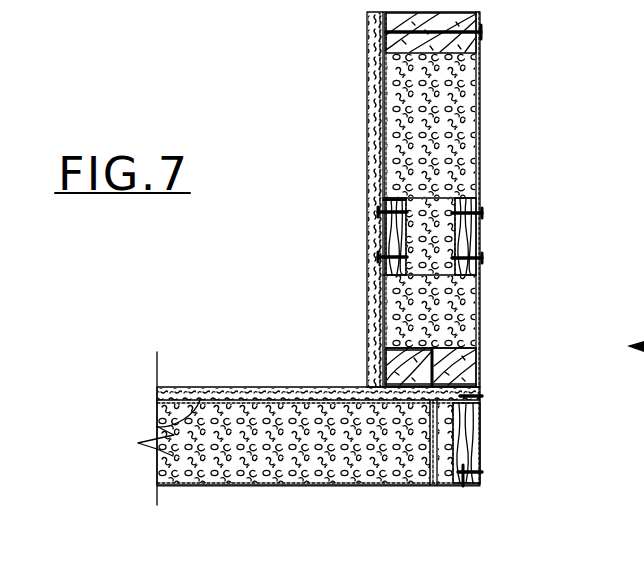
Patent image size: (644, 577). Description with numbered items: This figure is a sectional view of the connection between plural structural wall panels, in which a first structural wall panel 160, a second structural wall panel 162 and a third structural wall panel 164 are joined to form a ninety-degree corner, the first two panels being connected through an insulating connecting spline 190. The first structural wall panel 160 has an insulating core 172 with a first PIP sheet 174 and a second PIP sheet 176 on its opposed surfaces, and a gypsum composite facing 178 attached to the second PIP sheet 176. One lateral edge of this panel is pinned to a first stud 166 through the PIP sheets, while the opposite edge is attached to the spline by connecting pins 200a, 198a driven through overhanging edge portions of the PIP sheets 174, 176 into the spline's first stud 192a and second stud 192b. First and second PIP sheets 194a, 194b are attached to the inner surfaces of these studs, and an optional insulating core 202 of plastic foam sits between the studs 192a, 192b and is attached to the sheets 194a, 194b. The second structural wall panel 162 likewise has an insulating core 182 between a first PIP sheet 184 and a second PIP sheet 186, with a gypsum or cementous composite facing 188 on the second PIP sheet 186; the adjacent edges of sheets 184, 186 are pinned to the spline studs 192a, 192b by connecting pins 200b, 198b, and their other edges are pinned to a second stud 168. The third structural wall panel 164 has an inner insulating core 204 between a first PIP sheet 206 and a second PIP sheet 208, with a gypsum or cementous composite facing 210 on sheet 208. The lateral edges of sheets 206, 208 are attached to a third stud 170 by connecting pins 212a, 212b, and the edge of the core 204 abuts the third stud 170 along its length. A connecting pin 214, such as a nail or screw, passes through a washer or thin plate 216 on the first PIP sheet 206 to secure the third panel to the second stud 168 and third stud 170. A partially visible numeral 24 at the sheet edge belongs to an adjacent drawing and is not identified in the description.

The first structural wall panel 160 is at (360, 69).
The second structural wall panel 162 is at (360, 310).
The third structural wall panel 164 is at (221, 379).
The first stud 166 is at (478, 58).
The second stud 168 is at (480, 362).
The third stud 170 is at (480, 432).
The insulating core 172 is at (405, 74).
The first PIP sheet 174 is at (480, 88).
The second PIP sheet 176 is at (383, 132).
The gypsum composite facing 178 is at (382, 100).
The insulating core 182 is at (372, 284).
The first PIP sheet 184 is at (478, 313).
The second PIP sheet 186 is at (384, 350).
The gypsum composite facing 188 is at (383, 364).
The insulating connecting spline 190 is at (490, 184).
The first stud 192a is at (478, 221).
The second stud 192b is at (384, 204).
The first PIP sheet 194a is at (415, 270).
The second PIP sheet 194b is at (378, 213).
The connecting pin 198a is at (383, 205).
The connecting pin 198b is at (383, 257).
The connecting pin 200a is at (480, 199).
The connecting pin 200b is at (478, 242).
The insulating core 202 is at (474, 271).
The insulating core 204 is at (178, 460).
The first PIP sheet 206 is at (190, 488).
The second PIP sheet 208 is at (160, 428).
The gypsum or cementous composite facing 210 is at (183, 388).
The connecting pin 212a is at (482, 468).
The connecting pin 212b is at (478, 412).
The connecting pin 214 is at (428, 470).
The washer or thin plate 216 is at (422, 450).
The adjacent figure element (partial) 24 is at (634, 331).